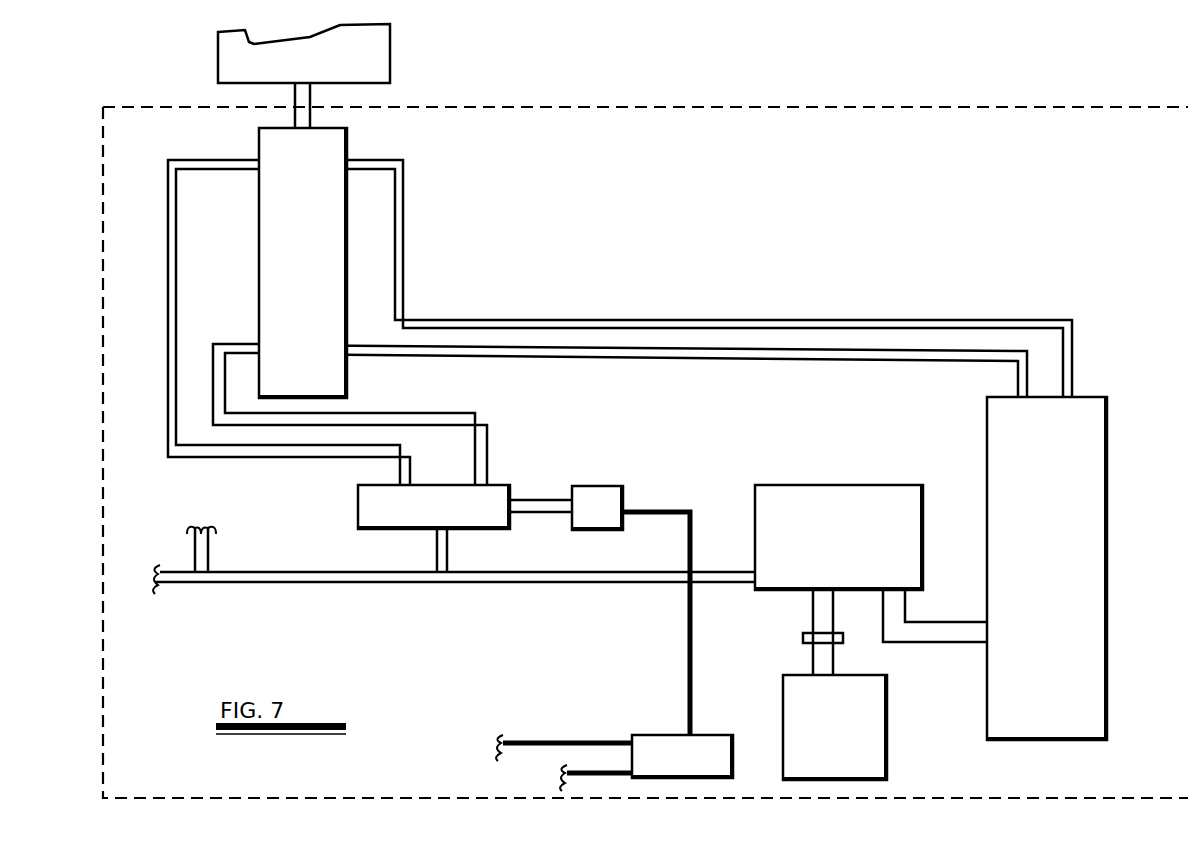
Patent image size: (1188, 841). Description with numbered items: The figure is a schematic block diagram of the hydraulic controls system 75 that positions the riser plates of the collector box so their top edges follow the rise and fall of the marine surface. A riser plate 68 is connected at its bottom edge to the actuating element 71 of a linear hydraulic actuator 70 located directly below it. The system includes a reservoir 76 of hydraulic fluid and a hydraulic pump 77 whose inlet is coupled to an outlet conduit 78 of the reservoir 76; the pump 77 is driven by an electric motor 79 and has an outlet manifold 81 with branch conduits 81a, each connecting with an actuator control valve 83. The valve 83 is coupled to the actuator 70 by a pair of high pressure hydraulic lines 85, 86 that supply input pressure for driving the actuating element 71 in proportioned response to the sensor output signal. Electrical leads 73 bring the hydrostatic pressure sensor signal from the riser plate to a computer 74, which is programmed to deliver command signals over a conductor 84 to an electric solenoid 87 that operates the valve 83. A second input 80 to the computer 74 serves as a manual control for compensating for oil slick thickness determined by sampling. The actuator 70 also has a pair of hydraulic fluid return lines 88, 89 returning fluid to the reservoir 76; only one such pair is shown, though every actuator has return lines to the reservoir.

The riser plate 68 is at (390, 59).
The linear hydraulic actuator 70 is at (245, 228).
The actuating element 71 is at (312, 117).
The electrical leads 73 is at (532, 737).
The computer 74 is at (663, 740).
The hydraulic controls system 75 is at (672, 100).
The reservoir 76 is at (1070, 571).
The hydraulic pump 77 is at (842, 485).
The outlet conduit 78 is at (918, 643).
The electric motor 79 is at (797, 680).
The second input 80 is at (598, 767).
The outlet manifold 81 is at (727, 573).
The branch conduit 81a is at (195, 555).
The actuator control valve 83 is at (363, 508).
The conductor 84 is at (687, 643).
The high pressure hydraulic line 85 is at (310, 457).
The high pressure hydraulic line 86 is at (462, 418).
The solenoid 87 is at (592, 485).
The hydraulic fluid return line 88 is at (798, 318).
The hydraulic fluid return line 89 is at (842, 363).